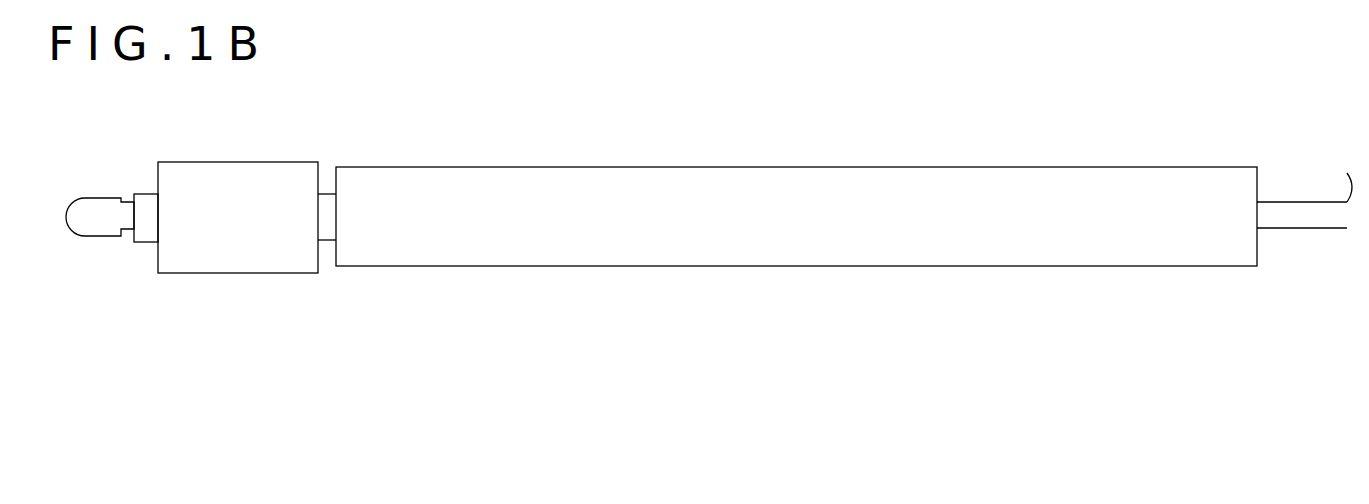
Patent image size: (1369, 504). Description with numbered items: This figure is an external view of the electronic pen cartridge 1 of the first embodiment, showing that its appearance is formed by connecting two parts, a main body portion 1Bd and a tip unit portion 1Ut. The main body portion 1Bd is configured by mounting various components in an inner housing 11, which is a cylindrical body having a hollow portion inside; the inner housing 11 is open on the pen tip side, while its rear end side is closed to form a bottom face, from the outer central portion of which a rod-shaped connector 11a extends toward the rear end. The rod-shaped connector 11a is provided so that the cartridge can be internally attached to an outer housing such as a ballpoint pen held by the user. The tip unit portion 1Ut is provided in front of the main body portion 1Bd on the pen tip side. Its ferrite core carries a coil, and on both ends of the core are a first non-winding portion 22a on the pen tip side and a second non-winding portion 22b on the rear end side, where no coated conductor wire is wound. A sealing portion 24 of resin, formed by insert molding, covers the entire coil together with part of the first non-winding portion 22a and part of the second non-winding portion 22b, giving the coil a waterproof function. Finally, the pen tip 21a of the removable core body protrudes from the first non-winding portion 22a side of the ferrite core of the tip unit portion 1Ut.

The electronic pen cartridge 1 is at (653, 158).
The tip unit portion 1Ut is at (235, 282).
The main body portion 1Bd is at (659, 275).
The inner housing 11 is at (523, 167).
The rod-shaped connector 11a is at (1305, 200).
The pen tip 21a is at (102, 208).
The first non-winding portion 22a is at (147, 192).
The second non-winding portion 22b is at (326, 203).
The sealing portion 24 is at (243, 162).